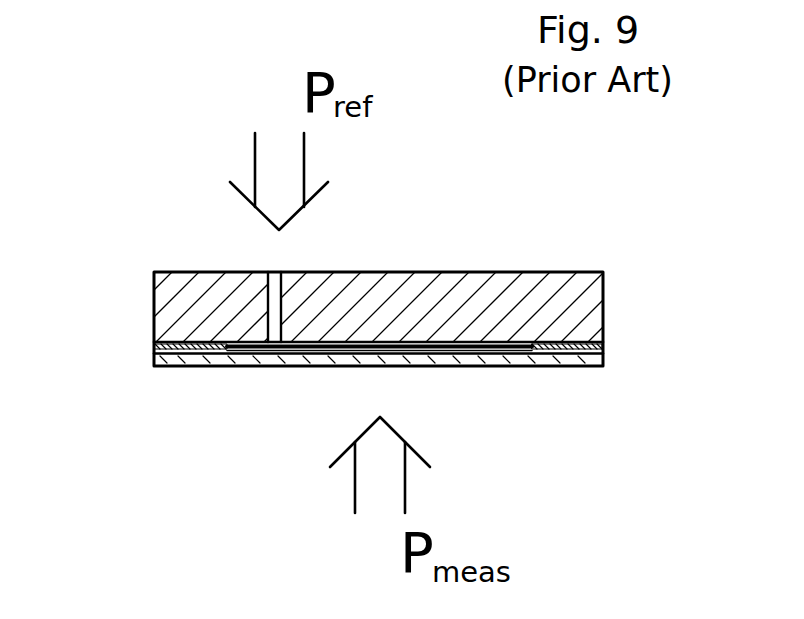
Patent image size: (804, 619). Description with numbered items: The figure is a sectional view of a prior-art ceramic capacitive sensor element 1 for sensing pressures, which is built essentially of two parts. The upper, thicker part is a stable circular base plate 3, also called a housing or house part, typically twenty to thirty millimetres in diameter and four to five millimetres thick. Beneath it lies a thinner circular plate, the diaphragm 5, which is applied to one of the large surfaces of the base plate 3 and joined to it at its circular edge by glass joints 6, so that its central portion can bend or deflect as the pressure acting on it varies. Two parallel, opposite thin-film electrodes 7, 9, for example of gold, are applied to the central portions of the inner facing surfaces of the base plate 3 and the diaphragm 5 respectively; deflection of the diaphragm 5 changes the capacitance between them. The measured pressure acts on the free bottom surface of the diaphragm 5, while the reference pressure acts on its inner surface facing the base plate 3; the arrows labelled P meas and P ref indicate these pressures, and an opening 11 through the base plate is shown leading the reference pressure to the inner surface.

The ceramic capacitive sensor element 1 is at (616, 281).
The base plate 3 is at (158, 274).
The diaphragm 5 is at (155, 362).
The glass joints 6 is at (603, 351).
The electrode 7 is at (384, 343).
The electrode 9 is at (340, 354).
The pressure channel 11 is at (272, 285).